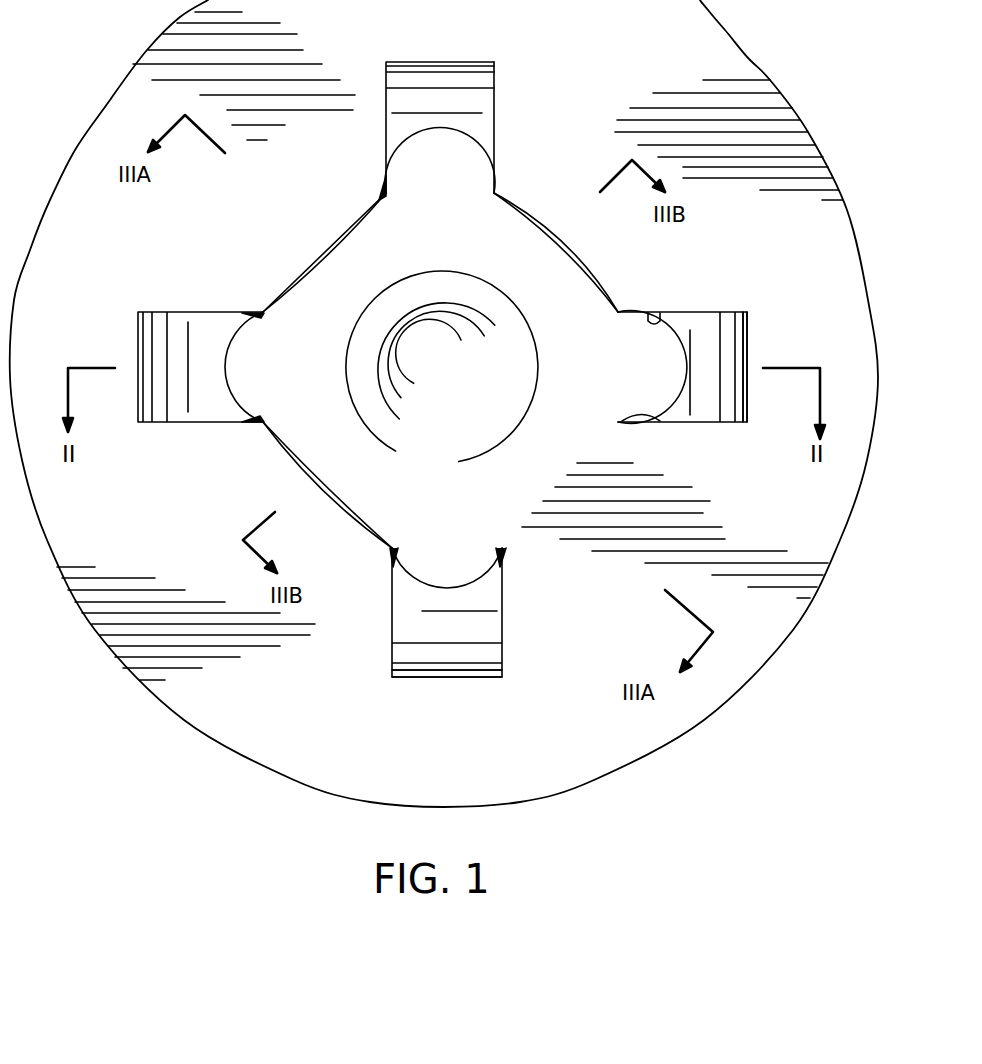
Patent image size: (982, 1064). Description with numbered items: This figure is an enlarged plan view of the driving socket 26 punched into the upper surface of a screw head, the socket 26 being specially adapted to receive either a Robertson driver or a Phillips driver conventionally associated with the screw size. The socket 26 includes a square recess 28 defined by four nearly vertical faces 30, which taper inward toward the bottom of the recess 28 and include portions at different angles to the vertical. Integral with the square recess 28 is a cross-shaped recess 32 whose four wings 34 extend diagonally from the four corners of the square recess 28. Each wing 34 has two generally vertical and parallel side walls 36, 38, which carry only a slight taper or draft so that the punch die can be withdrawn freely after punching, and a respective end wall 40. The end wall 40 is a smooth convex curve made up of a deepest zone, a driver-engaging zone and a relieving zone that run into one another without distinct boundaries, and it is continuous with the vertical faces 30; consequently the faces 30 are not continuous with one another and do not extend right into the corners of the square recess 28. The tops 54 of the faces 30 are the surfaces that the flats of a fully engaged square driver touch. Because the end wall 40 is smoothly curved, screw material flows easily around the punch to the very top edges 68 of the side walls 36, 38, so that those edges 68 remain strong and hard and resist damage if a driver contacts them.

The driving socket 26 is at (377, 258).
The square recess 28 is at (517, 262).
The vertical faces 30 is at (318, 268).
The cross-shaped recess 32 is at (485, 152).
The wings 34 is at (463, 97).
The side wall 36 is at (630, 416).
The side wall 38 is at (655, 313).
The end wall 40 is at (725, 400).
The tops of the faces 54 is at (580, 276).
The top edges of the side walls 68 is at (385, 183).